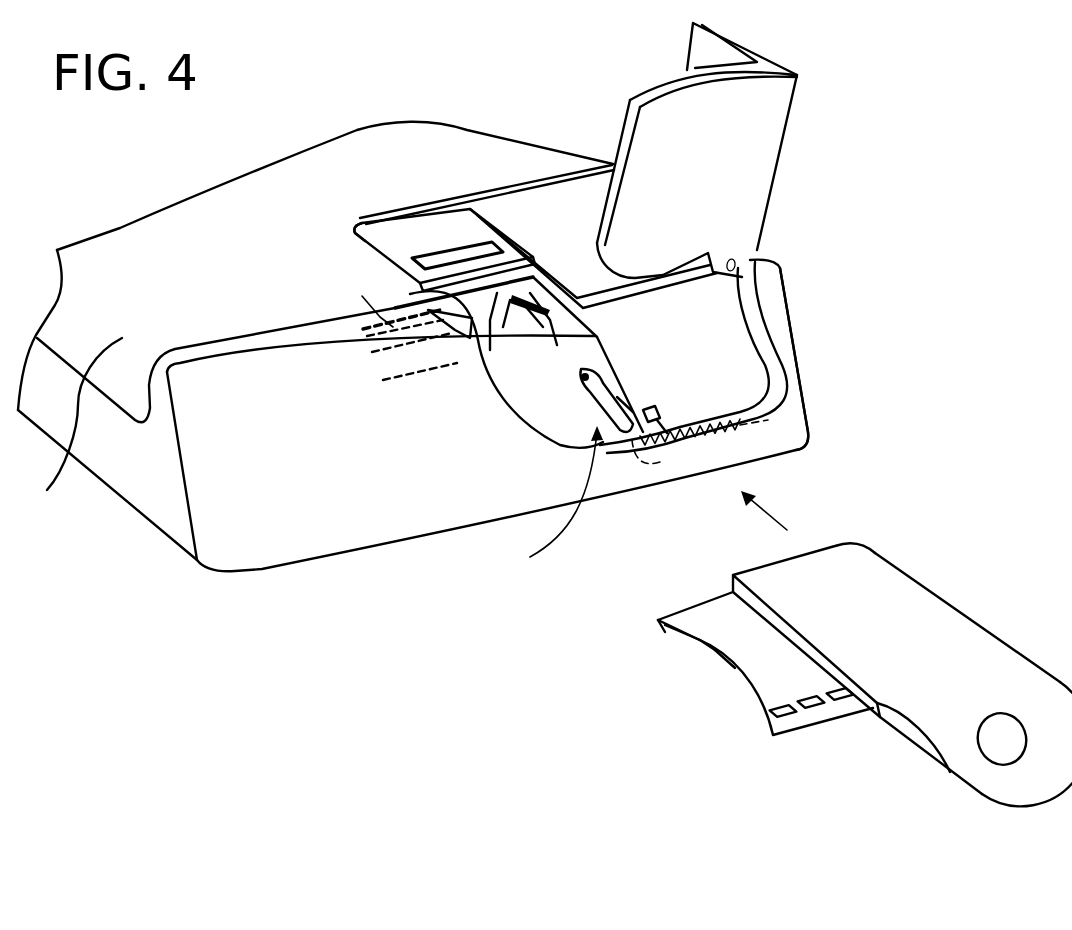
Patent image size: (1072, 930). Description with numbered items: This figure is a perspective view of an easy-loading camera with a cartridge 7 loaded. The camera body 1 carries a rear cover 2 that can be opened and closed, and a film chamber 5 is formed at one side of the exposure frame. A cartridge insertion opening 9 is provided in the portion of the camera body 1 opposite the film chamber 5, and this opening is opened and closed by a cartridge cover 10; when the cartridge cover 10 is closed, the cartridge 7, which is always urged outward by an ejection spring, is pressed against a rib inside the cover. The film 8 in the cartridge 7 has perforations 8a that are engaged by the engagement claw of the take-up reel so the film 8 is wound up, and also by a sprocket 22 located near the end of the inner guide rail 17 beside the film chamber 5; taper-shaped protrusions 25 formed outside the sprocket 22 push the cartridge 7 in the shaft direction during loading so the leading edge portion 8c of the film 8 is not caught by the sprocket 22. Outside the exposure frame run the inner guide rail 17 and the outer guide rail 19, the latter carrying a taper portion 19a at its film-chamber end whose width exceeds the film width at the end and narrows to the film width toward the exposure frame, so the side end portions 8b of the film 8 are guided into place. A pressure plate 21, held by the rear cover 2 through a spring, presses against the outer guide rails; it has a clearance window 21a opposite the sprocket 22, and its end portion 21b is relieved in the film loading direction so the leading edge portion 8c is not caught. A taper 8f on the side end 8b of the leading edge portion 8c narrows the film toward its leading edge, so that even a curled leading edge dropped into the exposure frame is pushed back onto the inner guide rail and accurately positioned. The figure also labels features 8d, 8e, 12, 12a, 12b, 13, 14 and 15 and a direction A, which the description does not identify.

The camera body 1 is at (328, 516).
The rear cover 2 is at (315, 318).
The film chamber 5 is at (737, 347).
The cartridge 7 is at (918, 597).
The film 8 is at (752, 675).
The perforations 8a is at (813, 713).
The side end portions 8b is at (730, 596).
The leading edge portion 8c is at (707, 647).
The cartridge edge portion 8d is at (667, 630).
The cartridge curved portion 8e is at (730, 660).
The taper 8f is at (660, 620).
The cartridge insertion opening 9 is at (806, 447).
The cartridge cover 10 is at (753, 173).
The front panel 12 is at (590, 410).
The bracket 12a is at (615, 395).
The stopper 12b is at (660, 410).
The lever pin 13 is at (580, 378).
The paper feed region 14 is at (711, 460).
The cutter teeth 15 is at (677, 467).
The inner guide rail 17 is at (362, 296).
The outer guide rail 19 is at (375, 345).
The taper portion 19a is at (497, 340).
The pressure plate 21 is at (418, 228).
The clearance window 21a is at (358, 222).
The end portion 21b is at (457, 263).
The sprocket 22 is at (423, 295).
The taper-shaped protrusions 25 is at (515, 343).
The insertion direction A is at (557, 506).